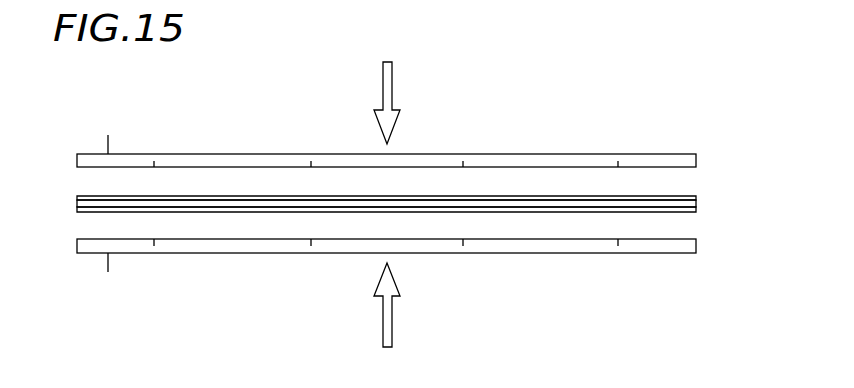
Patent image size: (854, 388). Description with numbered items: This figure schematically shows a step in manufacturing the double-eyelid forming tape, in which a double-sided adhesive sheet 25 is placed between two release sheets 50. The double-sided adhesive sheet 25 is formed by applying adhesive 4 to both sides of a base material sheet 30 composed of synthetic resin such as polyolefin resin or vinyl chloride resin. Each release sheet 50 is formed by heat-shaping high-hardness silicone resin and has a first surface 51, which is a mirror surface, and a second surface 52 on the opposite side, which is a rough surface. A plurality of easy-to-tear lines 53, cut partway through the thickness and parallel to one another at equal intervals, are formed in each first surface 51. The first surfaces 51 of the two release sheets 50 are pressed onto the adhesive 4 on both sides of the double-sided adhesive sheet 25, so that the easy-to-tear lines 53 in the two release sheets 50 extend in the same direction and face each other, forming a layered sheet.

The adhesive 4 is at (699, 196).
The double-sided adhesive sheet 25 is at (437, 206).
The base material sheet 30 is at (698, 205).
The release sheet 50 is at (649, 160).
The first surface 51 is at (108, 168).
The second surface 52 is at (107, 152).
The easy-to-tear line 53 is at (310, 161).